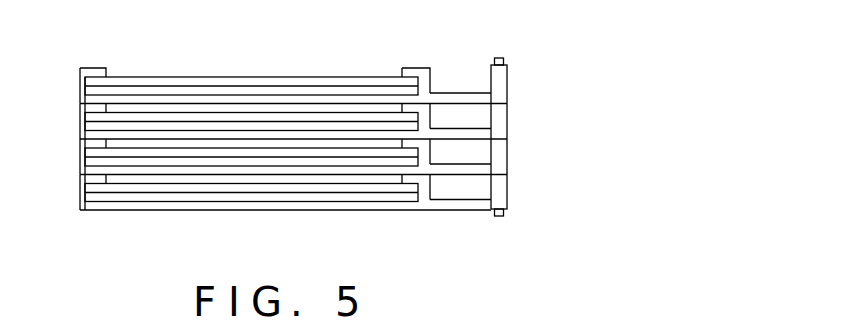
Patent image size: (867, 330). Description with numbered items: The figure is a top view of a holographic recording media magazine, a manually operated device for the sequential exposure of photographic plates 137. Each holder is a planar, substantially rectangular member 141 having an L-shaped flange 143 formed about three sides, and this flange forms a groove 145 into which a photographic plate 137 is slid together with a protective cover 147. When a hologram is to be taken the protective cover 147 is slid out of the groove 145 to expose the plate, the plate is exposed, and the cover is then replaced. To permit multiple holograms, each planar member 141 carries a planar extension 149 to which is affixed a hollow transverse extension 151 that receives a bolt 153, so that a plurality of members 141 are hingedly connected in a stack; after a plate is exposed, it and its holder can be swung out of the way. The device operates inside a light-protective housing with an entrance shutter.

The photographic plate 137 is at (156, 77).
The planar member 141 is at (305, 92).
The L-shaped flange 143 is at (80, 77).
The groove 145 is at (80, 116).
The protective cover 147 is at (180, 77).
The planar extension 149 is at (458, 90).
The hollow transverse extension 151 is at (508, 81).
The bolt 153 is at (503, 217).